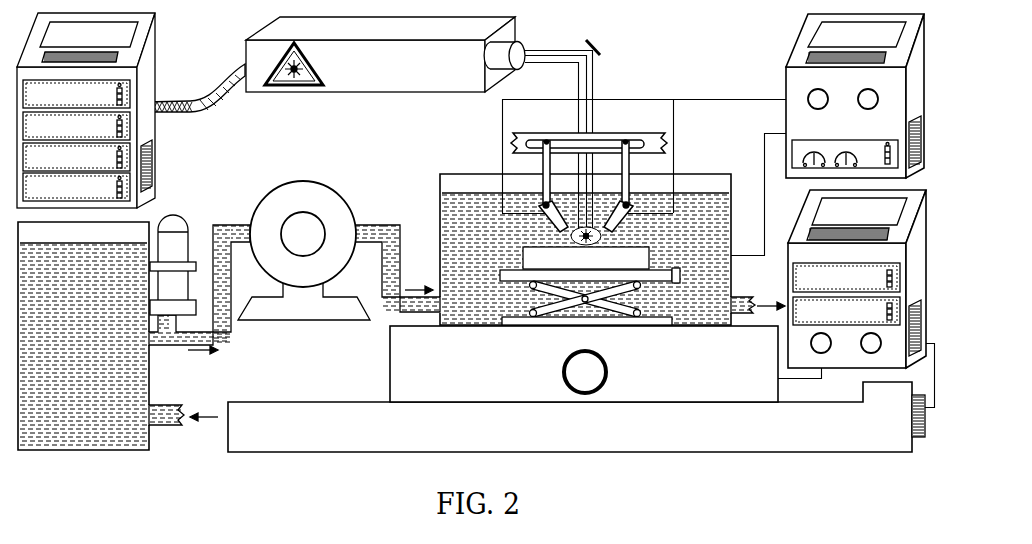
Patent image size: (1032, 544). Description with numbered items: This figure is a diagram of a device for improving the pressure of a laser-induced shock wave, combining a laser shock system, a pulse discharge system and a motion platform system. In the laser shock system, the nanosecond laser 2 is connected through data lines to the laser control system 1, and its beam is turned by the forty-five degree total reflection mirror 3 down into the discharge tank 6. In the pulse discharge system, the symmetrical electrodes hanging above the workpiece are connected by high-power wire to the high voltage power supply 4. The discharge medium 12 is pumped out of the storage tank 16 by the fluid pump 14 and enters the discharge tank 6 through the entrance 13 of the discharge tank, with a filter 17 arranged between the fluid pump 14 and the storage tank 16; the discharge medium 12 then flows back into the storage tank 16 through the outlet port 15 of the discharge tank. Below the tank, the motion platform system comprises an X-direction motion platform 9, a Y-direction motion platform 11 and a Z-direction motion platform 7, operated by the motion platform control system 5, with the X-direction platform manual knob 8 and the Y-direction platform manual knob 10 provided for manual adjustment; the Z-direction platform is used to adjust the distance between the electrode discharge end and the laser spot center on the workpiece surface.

The laser control system 1 is at (145, 125).
The nanosecond laser 2 is at (350, 78).
The 45° total reflection mirror 3 is at (600, 58).
The high voltage power supply 4 is at (778, 39).
The motion platform control system 5 is at (793, 202).
The discharge tank 6 is at (686, 316).
The Z-direction motion platform 7 is at (615, 322).
The X-direction platform manual knob 8 is at (910, 417).
The X-direction motion platform 9 is at (793, 420).
The Y-direction platform manual knob 10 is at (578, 388).
The Y-direction motion platform 11 is at (498, 390).
The discharge medium 12 is at (457, 313).
The entrance of the discharge tank 13 is at (398, 313).
The fluid pump 14 is at (278, 308).
The outlet port of the discharge tank 15 is at (780, 277).
The storage tank 16 is at (138, 348).
The filter 17 is at (175, 225).